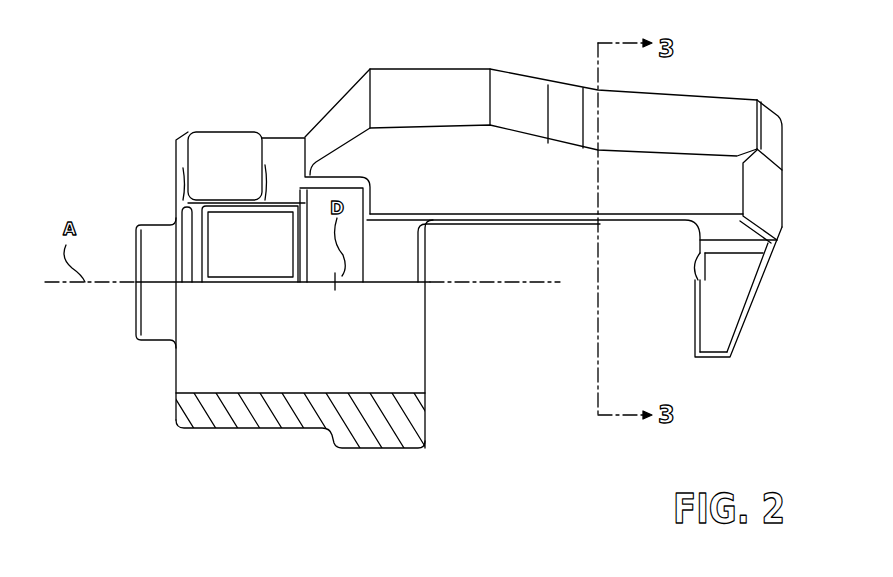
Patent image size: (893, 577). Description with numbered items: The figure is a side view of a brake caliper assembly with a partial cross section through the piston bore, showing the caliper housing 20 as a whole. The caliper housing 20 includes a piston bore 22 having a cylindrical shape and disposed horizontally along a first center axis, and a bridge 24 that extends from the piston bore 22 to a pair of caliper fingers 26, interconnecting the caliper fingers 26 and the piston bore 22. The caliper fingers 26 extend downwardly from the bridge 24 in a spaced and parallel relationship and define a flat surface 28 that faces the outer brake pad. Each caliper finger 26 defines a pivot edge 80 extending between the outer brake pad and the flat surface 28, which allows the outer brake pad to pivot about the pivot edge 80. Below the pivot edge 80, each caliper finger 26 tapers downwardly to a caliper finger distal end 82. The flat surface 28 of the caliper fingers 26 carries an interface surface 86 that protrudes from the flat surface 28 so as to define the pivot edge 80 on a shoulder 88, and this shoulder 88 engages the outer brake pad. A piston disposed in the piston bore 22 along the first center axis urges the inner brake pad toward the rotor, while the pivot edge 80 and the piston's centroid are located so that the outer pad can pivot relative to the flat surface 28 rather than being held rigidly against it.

The caliper housing 20 is at (176, 141).
The piston bore 22 is at (195, 393).
The bridge 24 is at (509, 85).
The caliper fingers 26 is at (765, 200).
The flat surface 28 is at (703, 268).
The pivot edge 80 is at (695, 280).
The caliper finger distal end 82 is at (705, 360).
The interface surface 86 is at (692, 335).
The shoulder 88 is at (700, 278).